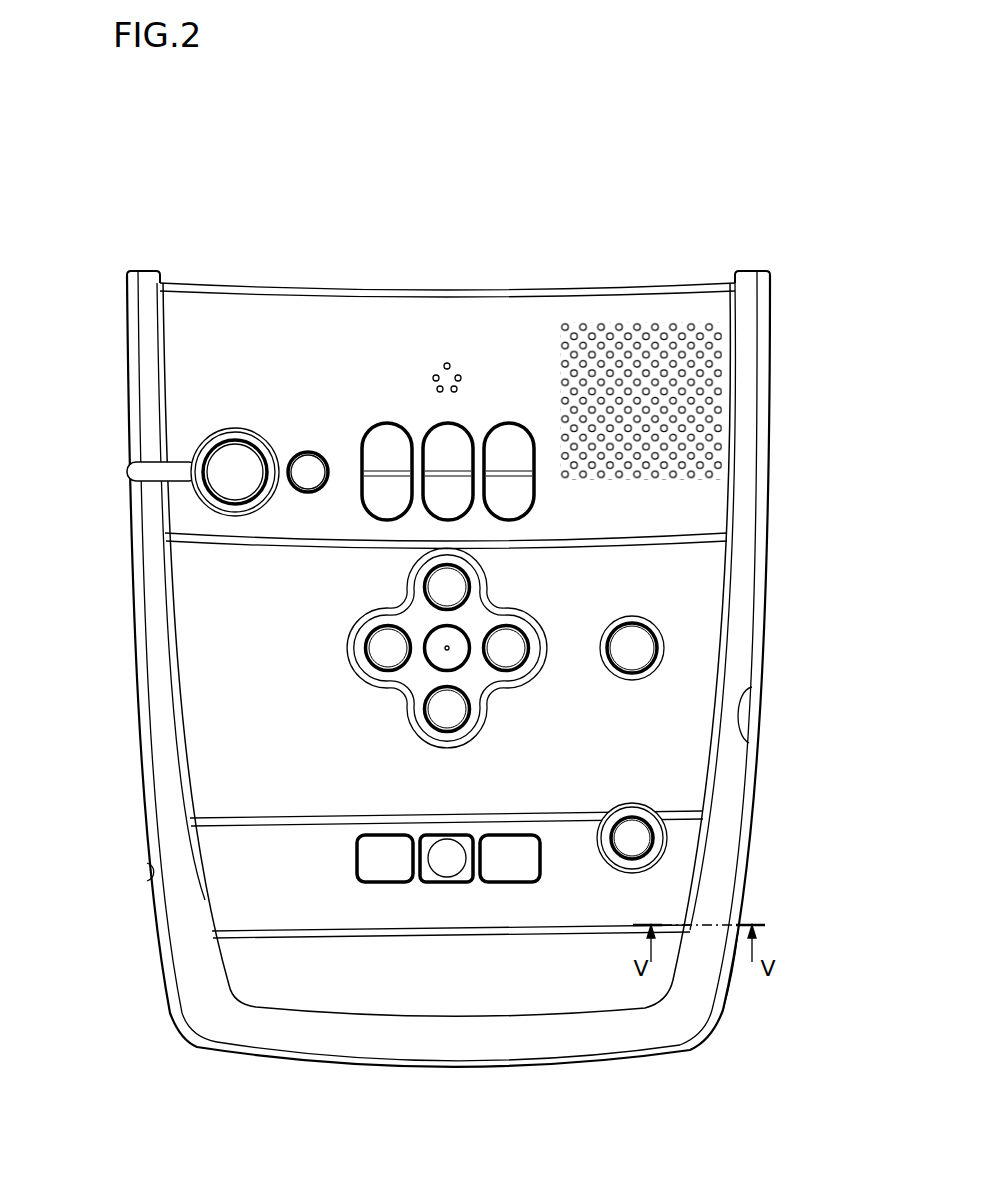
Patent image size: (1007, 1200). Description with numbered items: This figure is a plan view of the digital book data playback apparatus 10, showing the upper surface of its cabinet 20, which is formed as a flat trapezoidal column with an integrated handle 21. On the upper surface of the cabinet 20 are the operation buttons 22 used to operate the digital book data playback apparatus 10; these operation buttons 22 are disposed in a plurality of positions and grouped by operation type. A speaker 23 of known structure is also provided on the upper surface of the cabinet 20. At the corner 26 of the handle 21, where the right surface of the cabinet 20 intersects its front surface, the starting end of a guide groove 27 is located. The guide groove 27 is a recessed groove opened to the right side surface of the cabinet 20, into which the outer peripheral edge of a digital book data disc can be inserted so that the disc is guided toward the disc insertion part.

The digital book data playback apparatus 10 is at (541, 220).
The cabinet 20 is at (737, 637).
The handle 21 is at (430, 1040).
The operation buttons 22 is at (233, 460).
The speaker 23 is at (637, 360).
The corner 26 is at (700, 1045).
The guide groove 27 is at (728, 1014).